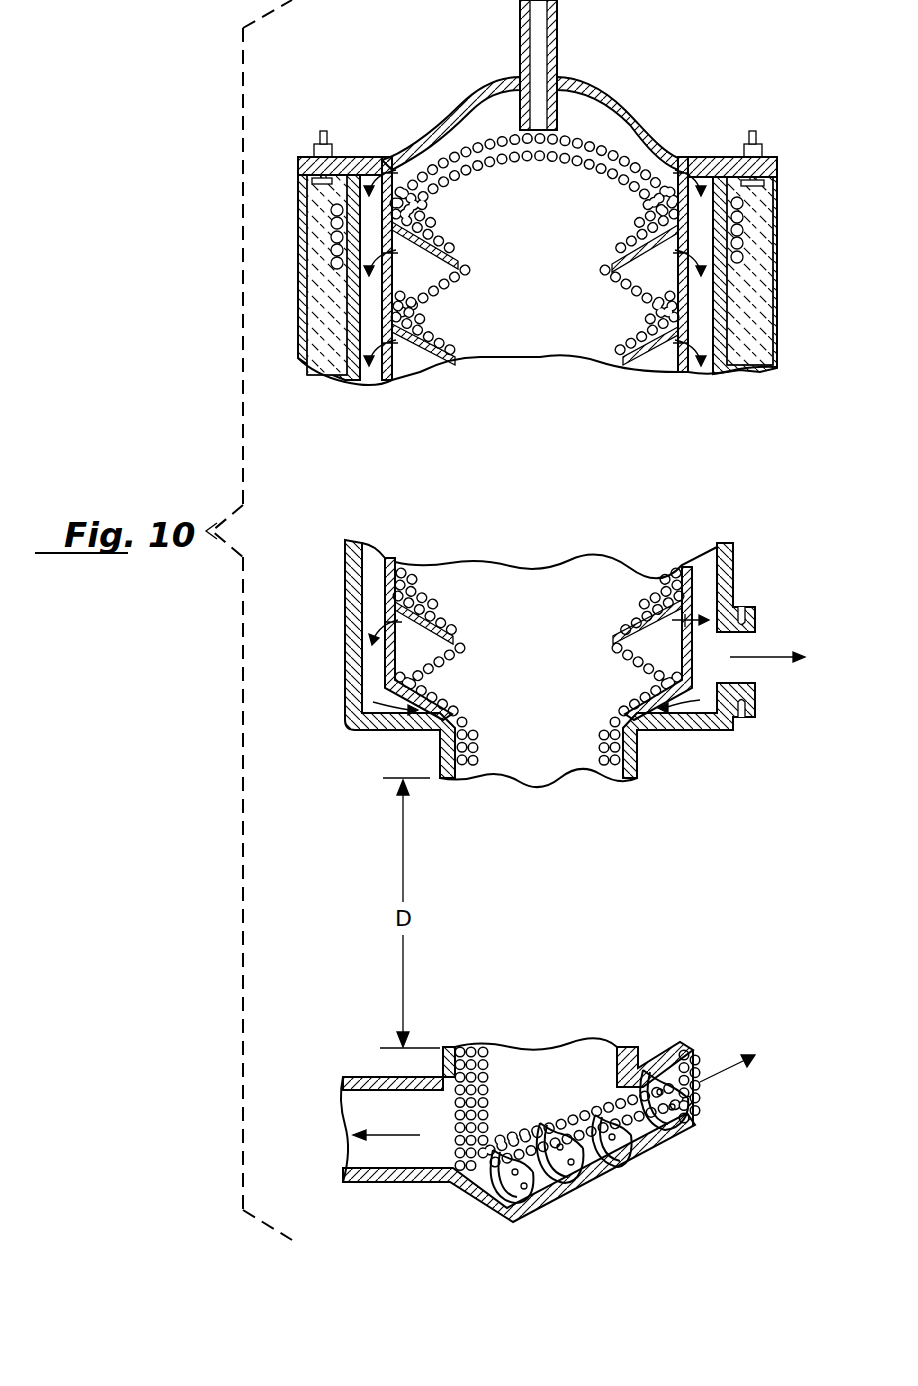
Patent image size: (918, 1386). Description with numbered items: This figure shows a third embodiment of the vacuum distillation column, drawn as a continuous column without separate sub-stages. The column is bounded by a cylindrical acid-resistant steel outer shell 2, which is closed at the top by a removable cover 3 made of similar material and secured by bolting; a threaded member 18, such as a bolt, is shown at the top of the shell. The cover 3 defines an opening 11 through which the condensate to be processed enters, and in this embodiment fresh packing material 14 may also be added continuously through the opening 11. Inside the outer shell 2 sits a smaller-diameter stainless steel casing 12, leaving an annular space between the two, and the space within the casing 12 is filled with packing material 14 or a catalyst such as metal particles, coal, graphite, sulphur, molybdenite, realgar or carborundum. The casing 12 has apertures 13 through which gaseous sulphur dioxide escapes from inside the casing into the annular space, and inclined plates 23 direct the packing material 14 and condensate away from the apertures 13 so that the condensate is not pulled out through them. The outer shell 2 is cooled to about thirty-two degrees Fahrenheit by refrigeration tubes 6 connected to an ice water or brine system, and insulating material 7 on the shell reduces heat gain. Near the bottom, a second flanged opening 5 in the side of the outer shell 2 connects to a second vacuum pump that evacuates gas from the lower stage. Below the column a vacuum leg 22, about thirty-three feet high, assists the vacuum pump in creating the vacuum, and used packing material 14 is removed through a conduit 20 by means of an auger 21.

The outer shell 2 is at (725, 337).
The removable cover 3 is at (650, 137).
The second flanged opening 5 is at (747, 642).
The refrigeration tubes 6 is at (743, 253).
The insulating material 7 is at (752, 300).
The opening 11 is at (538, 86).
The casing 12 is at (685, 372).
The apertures 13 is at (335, 243).
The packing material 14 is at (457, 342).
The threaded member 18 is at (755, 135).
The conduit 20 is at (694, 1100).
The auger 21 is at (667, 1110).
The vacuum leg 22 is at (597, 773).
The plates 23 is at (656, 353).